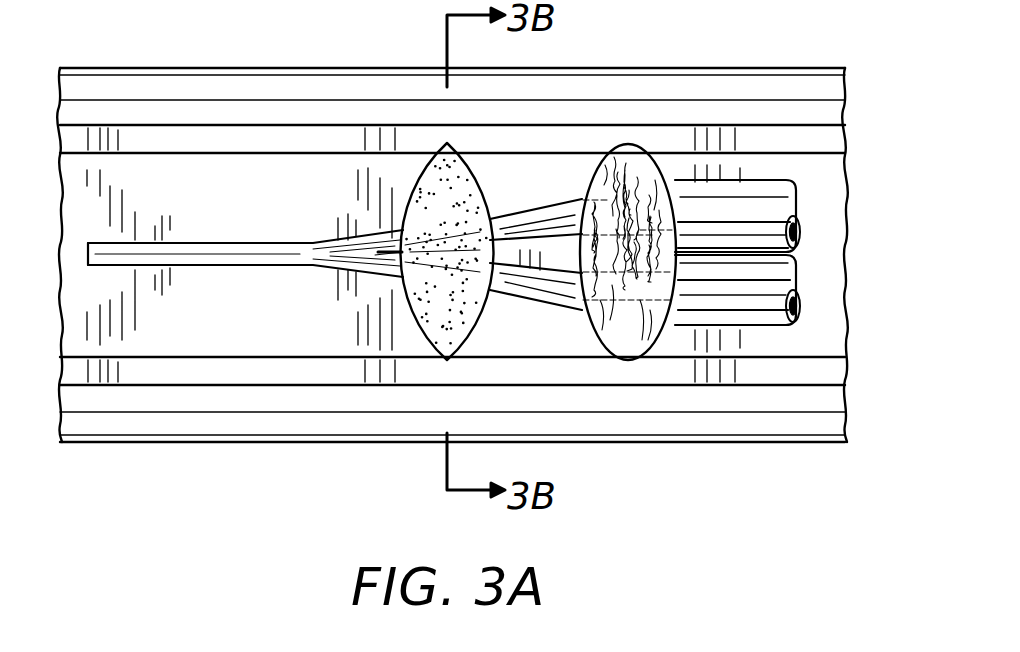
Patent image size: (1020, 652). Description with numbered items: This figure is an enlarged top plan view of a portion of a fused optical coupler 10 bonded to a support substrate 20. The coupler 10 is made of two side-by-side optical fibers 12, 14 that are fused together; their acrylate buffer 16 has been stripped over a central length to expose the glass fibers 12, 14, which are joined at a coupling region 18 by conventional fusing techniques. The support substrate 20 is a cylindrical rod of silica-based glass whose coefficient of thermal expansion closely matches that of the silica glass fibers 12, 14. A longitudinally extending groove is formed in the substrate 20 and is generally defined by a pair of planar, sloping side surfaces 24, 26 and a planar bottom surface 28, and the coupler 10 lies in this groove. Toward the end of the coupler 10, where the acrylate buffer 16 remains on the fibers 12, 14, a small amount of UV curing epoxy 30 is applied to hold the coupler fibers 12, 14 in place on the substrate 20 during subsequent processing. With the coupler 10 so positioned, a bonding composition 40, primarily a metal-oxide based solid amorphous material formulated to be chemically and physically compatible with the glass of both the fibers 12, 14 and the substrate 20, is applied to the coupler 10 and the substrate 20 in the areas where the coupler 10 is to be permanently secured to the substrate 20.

The fused optical coupler 10 is at (307, 225).
The optical fiber 12 is at (547, 217).
The optical fiber 14 is at (560, 330).
The acrylate buffer 16 is at (797, 205).
The coupling region 18 is at (246, 256).
The support substrate 20 is at (797, 455).
The sloping side surface 24 is at (165, 140).
The sloping side surface 26 is at (165, 375).
The bottom surface 28 is at (258, 327).
The UV curing epoxy 30 is at (658, 170).
The bonding composition 40 is at (428, 178).